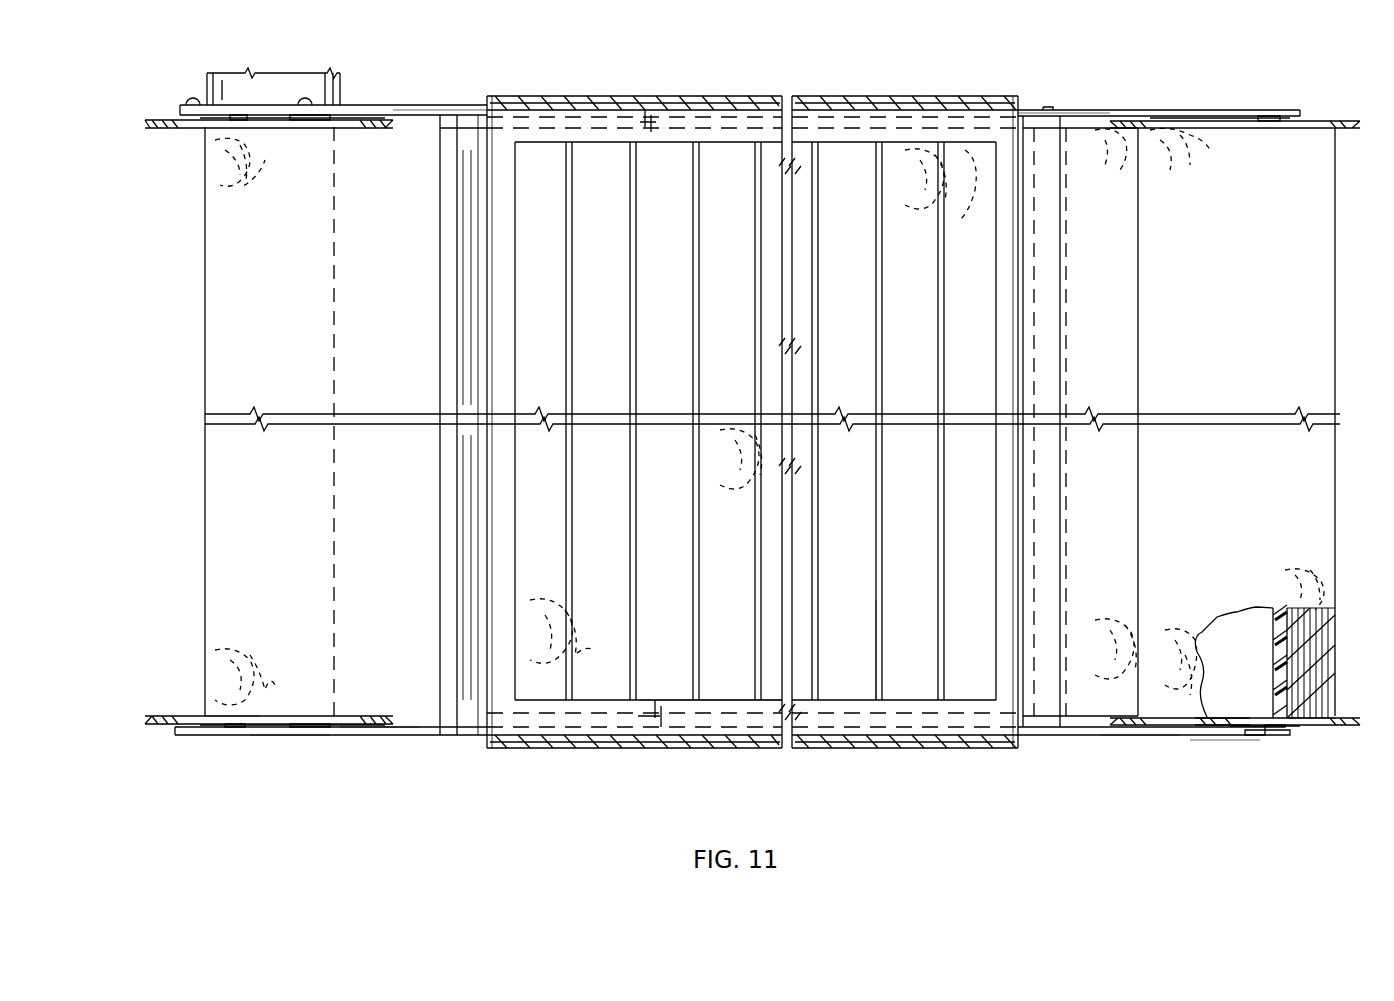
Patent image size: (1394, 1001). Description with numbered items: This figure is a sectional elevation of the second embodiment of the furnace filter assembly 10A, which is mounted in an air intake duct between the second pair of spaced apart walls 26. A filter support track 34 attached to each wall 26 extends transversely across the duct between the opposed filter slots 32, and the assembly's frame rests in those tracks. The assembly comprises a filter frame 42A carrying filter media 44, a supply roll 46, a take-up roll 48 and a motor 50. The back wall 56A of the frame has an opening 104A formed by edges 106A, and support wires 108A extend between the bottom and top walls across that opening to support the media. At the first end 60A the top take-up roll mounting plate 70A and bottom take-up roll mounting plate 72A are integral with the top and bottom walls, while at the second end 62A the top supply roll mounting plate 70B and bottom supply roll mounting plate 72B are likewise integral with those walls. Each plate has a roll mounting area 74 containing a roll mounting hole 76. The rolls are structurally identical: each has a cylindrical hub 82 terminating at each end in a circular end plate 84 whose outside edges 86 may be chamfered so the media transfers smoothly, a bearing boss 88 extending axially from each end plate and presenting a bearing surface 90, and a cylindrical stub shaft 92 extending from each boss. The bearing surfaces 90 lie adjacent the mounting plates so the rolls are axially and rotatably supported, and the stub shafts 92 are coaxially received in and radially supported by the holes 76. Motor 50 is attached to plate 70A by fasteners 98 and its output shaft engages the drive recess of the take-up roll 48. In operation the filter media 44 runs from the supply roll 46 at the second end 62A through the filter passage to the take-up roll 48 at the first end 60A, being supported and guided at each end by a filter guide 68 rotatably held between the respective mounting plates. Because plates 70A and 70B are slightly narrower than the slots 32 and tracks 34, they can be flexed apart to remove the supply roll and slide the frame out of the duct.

The furnace filter assembly 10A is at (192, 834).
The second pair of spaced apart walls 26 is at (838, 98).
The filter slots 32 is at (1010, 98).
The filter support track 34 is at (888, 100).
The filter frame 42A is at (740, 108).
The filter media 44 is at (970, 185).
The supply roll 46 is at (1343, 272).
The take-up roll 48 is at (198, 358).
The motor 50 is at (346, 78).
The back wall 56A is at (508, 130).
The first end 60A is at (313, 790).
The second end 62A is at (1228, 770).
The filter guide 68 is at (455, 606).
The top take-up roll mounting plate 70A is at (395, 112).
The top supply roll mounting plate 70B is at (1100, 114).
The bottom take-up roll mounting plate 72A is at (373, 738).
The bottom supply roll mounting plate 72B is at (1133, 738).
The roll mounting area 74 is at (347, 118).
The roll mounting hole 76 is at (1230, 740).
The cylindrical hub 82 is at (1280, 632).
The end plate 84 is at (192, 130).
The outside edges 86 is at (150, 130).
The bearing boss 88 is at (283, 122).
The bearing surface 90 is at (252, 116).
The stub shaft 92 is at (1290, 745).
The fasteners 98 is at (188, 99).
The opening 104A is at (727, 690).
The edges 106A is at (606, 146).
The support wires 108A is at (878, 668).